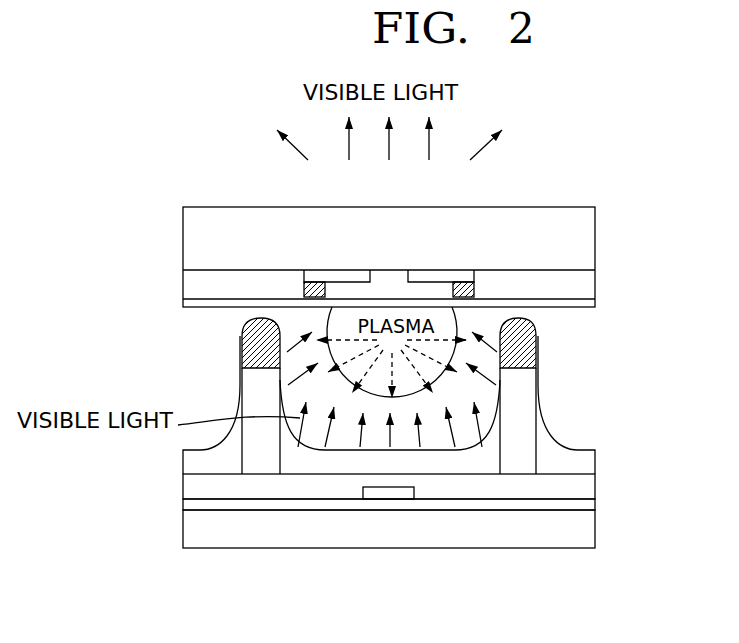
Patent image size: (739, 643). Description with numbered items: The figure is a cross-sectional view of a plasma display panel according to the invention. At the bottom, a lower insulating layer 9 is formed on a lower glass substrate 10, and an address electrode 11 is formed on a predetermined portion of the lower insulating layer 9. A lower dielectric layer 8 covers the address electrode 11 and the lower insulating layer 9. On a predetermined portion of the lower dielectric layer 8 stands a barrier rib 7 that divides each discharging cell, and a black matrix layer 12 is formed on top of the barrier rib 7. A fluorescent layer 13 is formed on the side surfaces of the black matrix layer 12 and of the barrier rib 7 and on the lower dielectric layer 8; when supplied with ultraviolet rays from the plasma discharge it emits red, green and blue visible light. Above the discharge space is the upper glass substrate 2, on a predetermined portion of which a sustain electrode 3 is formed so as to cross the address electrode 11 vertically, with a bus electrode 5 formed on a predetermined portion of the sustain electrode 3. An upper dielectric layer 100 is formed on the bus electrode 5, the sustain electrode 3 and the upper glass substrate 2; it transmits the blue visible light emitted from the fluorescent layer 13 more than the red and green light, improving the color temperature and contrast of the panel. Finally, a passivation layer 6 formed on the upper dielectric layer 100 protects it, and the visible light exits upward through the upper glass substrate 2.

The upper glass substrate 2 is at (597, 233).
The upper dielectric layer 100 is at (597, 282).
The passivation layer 6 is at (597, 307).
The sustain electrode 3 is at (305, 275).
The bus electrode 5 is at (304, 290).
The black matrix layer 12 is at (525, 338).
The barrier rib 7 is at (522, 398).
The fluorescent layer 13 is at (322, 465).
The lower dielectric layer 8 is at (585, 483).
The lower insulating layer 9 is at (585, 505).
The lower glass substrate 10 is at (583, 537).
The address electrode 11 is at (390, 492).